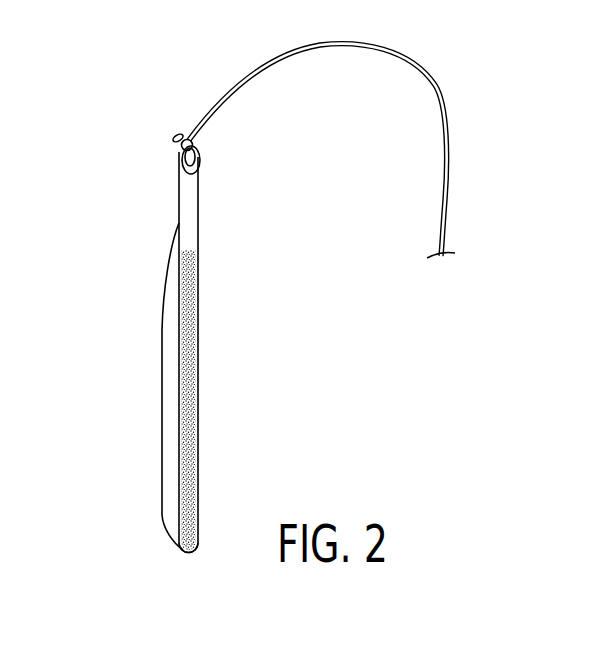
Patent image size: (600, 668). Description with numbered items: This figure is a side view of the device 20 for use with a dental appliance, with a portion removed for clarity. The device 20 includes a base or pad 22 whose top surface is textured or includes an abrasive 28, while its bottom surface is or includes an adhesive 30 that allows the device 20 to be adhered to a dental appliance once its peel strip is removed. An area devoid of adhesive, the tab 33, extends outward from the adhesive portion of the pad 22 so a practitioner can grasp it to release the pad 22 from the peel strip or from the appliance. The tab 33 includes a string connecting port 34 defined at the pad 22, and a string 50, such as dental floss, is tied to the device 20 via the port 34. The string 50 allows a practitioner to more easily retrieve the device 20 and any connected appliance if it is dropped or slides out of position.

The device 20 is at (102, 160).
The pad 22 is at (187, 555).
The abrasive 28 is at (188, 378).
The adhesive 30 is at (167, 392).
The tab 33 is at (178, 223).
The string connecting port 34 is at (165, 128).
The string 50 is at (443, 102).